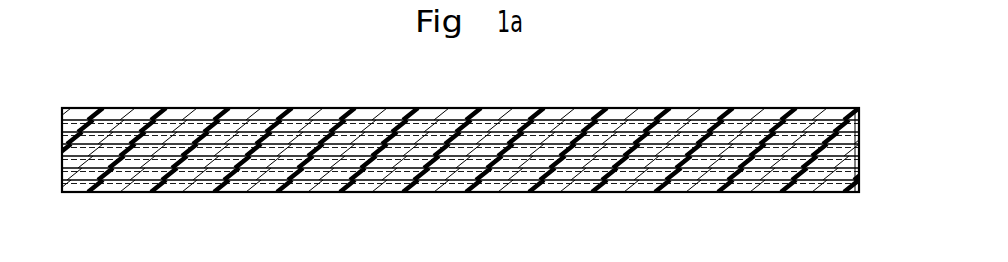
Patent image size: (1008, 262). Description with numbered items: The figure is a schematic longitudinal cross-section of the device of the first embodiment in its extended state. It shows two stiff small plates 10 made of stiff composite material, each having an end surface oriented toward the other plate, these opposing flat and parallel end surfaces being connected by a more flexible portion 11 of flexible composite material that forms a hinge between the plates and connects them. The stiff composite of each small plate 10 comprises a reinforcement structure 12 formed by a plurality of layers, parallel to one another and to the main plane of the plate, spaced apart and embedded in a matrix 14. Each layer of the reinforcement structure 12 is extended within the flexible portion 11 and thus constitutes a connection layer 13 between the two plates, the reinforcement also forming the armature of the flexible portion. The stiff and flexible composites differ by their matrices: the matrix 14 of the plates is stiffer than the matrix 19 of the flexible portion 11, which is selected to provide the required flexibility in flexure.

The small plate 10 is at (260, 97).
The flexible portion 11 is at (508, 93).
The reinforcement structure 12 is at (290, 138).
The connection layer 13 is at (545, 143).
The matrix 14 is at (113, 133).
The matrix 19 is at (422, 145).